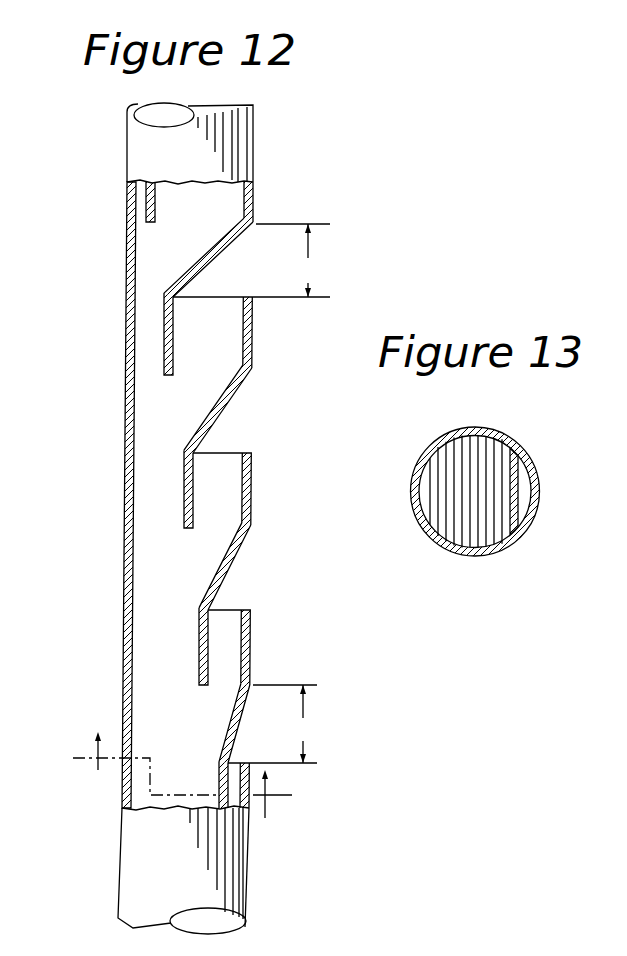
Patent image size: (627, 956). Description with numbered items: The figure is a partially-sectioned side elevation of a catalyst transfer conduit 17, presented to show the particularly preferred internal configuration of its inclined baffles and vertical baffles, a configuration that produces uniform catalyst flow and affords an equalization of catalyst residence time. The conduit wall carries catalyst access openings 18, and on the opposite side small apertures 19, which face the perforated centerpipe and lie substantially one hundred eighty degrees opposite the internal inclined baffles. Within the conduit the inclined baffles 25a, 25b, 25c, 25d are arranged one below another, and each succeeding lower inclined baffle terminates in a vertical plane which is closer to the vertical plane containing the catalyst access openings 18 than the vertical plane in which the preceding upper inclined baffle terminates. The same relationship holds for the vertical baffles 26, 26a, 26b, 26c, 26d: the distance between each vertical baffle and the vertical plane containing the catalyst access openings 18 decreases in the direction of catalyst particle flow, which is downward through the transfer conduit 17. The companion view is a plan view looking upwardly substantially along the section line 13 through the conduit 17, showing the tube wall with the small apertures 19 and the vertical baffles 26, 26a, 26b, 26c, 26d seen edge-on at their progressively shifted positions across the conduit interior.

In FIG. 12, the catalyst transfer conduit 17 is at (127, 160).
In FIG. 13, the catalyst transfer conduit 17 is at (443, 542).
In FIG. 12, the small apertures 19 is at (125, 427).
In FIG. 13, the small apertures 19 is at (414, 493).
In FIG. 12, the inclined baffle 25a is at (215, 252).
In FIG. 12, the inclined baffle 25b is at (213, 415).
In FIG. 12, the inclined baffle 25c is at (215, 585).
In FIG. 12, the inclined baffle 25d is at (231, 728).
In FIG. 12, the vertical baffle 26 is at (156, 207).
In FIG. 13, the vertical baffle 26 is at (437, 477).
In FIG. 12, the vertical baffle 26a is at (173, 323).
In FIG. 13, the vertical baffle 26a is at (456, 452).
In FIG. 12, the vertical baffle 26b is at (183, 507).
In FIG. 13, the vertical baffle 26b is at (475, 522).
In FIG. 12, the vertical baffle 26c is at (200, 662).
In FIG. 13, the vertical baffle 26c is at (493, 450).
In FIG. 12, the vertical baffle 26d is at (220, 778).
In FIG. 13, the vertical baffle 26d is at (515, 478).
In FIG. 12, the catalyst access openings 18 is at (251, 493).
In FIG. 12, the section line 13— 13 is at (185, 777).